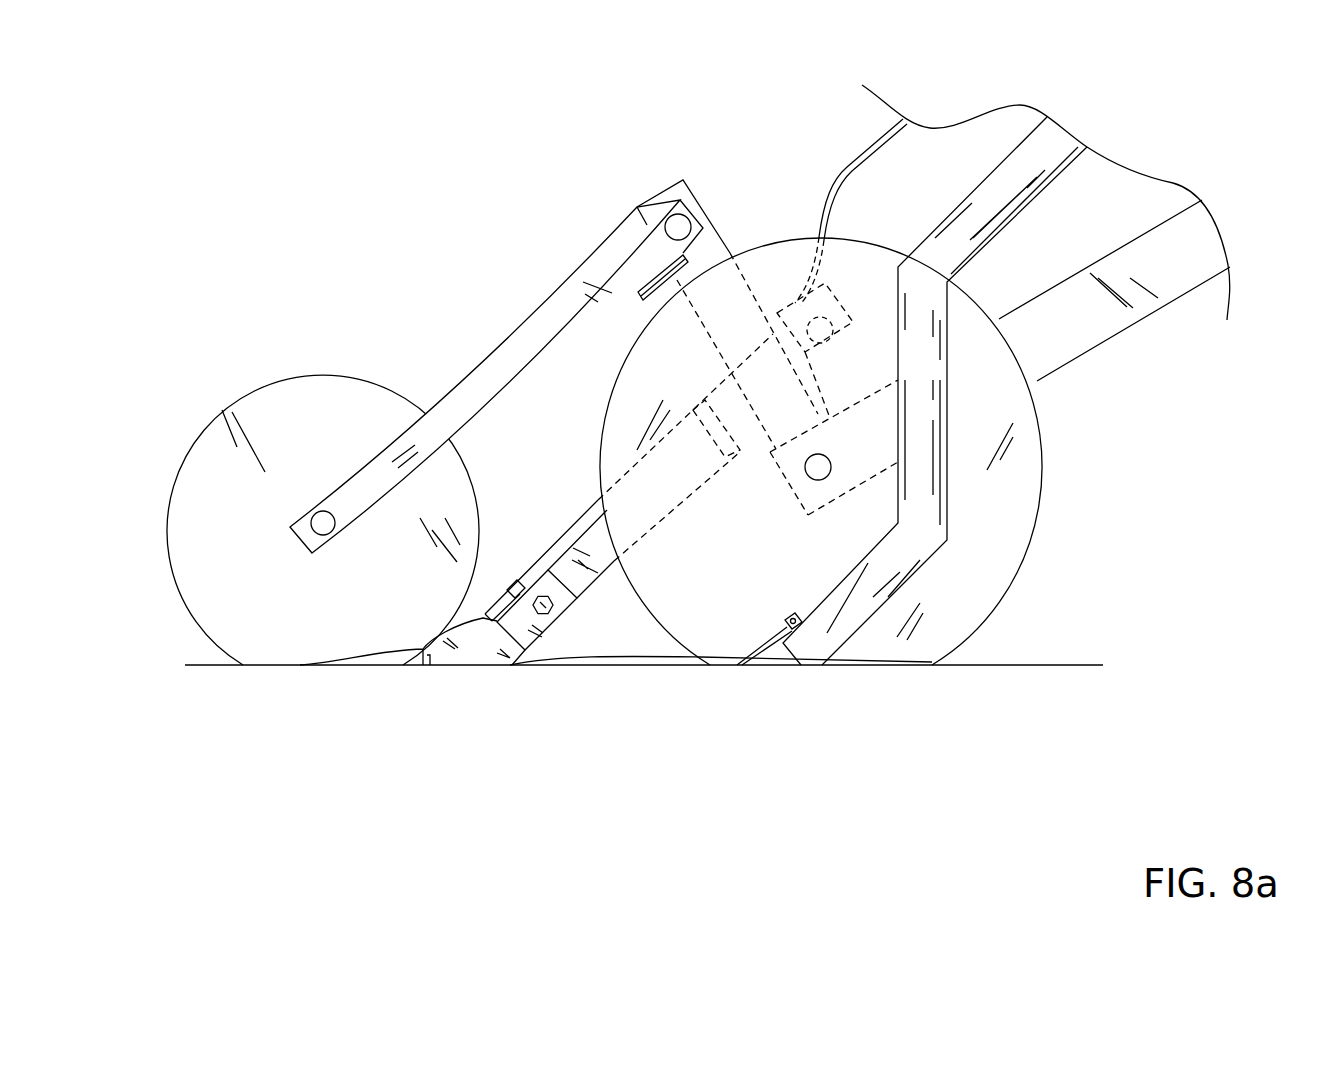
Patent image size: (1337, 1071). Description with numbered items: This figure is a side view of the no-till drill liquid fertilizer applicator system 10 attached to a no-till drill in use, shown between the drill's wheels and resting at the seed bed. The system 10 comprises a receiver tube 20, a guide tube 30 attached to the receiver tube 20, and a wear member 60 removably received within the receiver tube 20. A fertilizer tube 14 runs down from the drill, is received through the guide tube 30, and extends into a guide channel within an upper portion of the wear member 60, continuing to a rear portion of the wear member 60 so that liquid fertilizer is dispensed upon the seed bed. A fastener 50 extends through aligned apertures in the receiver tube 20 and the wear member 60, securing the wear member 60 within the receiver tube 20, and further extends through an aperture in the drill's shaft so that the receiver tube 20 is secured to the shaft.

The no-till drill liquid fertilizer applicator system 10 is at (335, 242).
The fertilizer tube 14 is at (847, 168).
The receiver tube 20 is at (568, 603).
The guide tube 30 is at (578, 527).
The fastener 50 is at (547, 615).
The wear member 60 is at (472, 659).